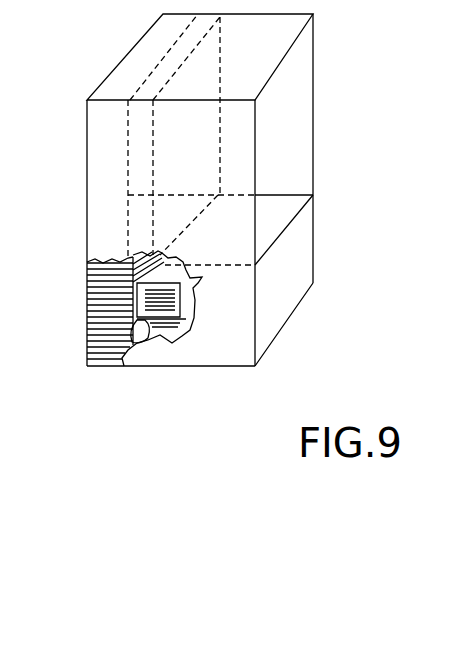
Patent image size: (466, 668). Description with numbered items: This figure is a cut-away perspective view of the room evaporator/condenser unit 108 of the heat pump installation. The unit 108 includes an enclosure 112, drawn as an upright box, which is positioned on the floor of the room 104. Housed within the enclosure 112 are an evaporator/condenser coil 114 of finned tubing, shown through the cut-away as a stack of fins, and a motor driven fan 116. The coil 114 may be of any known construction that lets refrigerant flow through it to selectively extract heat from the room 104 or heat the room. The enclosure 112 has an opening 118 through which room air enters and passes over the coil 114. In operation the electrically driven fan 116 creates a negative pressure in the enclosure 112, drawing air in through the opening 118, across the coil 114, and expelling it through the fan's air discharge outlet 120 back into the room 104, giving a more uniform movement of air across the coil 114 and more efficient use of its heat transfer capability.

The room 104 is at (376, 64).
The evaporator/condenser unit 108 is at (340, 160).
The enclosure 112 is at (315, 245).
The evaporator/condenser coil 114 is at (86, 323).
The motor driven fan 116 is at (191, 332).
The opening 118 is at (300, 80).
The air discharge outlet 120 is at (145, 330).